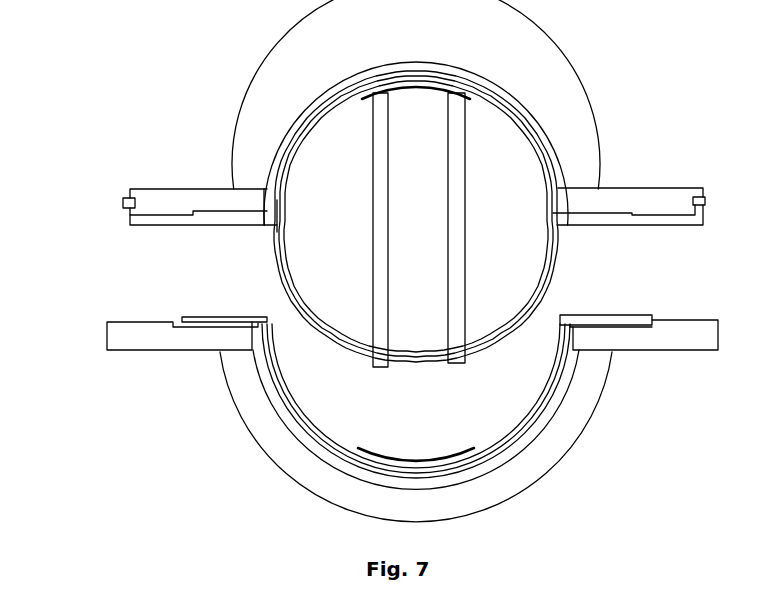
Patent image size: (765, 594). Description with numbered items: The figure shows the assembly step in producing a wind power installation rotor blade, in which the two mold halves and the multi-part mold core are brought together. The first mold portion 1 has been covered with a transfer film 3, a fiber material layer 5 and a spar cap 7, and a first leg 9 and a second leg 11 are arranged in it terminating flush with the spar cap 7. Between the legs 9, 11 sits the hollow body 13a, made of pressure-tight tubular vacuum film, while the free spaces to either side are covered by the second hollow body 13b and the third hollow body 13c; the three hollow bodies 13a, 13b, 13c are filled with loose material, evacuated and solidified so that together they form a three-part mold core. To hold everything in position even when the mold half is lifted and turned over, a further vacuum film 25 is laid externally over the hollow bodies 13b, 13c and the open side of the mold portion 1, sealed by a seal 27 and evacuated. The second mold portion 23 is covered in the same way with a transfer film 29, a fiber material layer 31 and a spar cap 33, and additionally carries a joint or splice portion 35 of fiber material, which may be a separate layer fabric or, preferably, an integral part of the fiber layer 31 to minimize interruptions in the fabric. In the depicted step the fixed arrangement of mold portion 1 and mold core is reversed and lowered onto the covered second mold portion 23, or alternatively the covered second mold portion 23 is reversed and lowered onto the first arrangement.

The first mold portion 1 is at (165, 195).
The transfer film 3 is at (280, 168).
The fiber material layer 5 is at (292, 145).
The spar cap 7 is at (375, 88).
The first leg 9 is at (462, 140).
The second leg 11 is at (378, 142).
The hollow body 13a is at (418, 235).
The second hollow body 13b is at (507, 210).
The third hollow body 13c is at (330, 210).
The second mold portion 23 is at (112, 345).
The vacuum film 25 is at (550, 270).
The seal 27 is at (125, 203).
The transfer film 29 is at (207, 323).
The fiber material layer 31 is at (330, 447).
The spar cap 33 is at (437, 460).
The joint or splice portion 35 is at (225, 319).